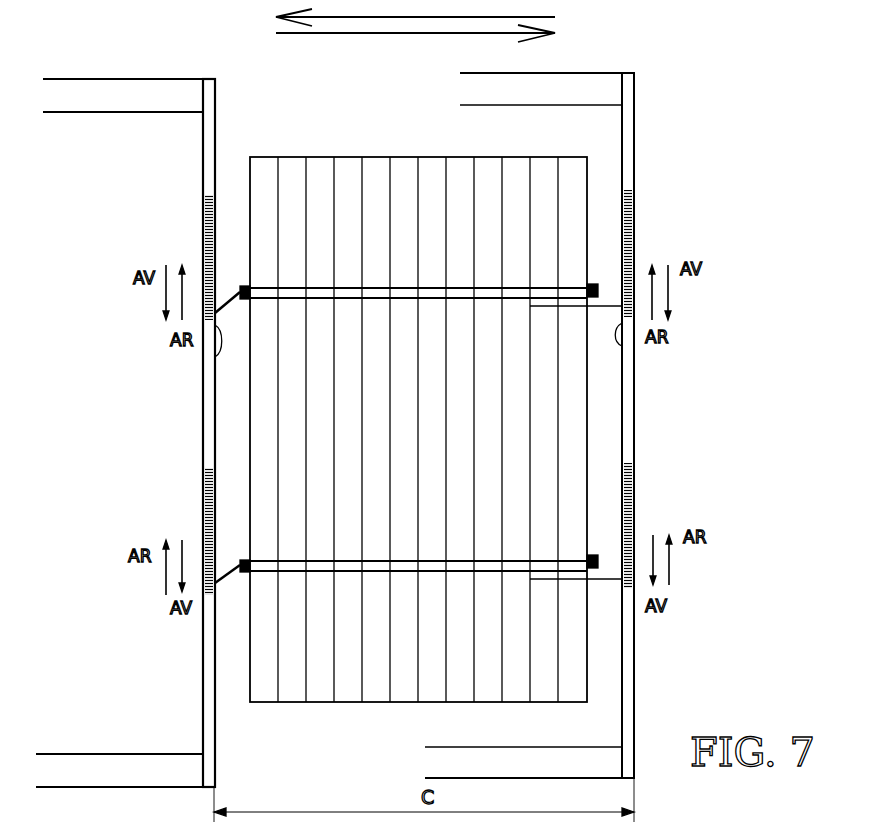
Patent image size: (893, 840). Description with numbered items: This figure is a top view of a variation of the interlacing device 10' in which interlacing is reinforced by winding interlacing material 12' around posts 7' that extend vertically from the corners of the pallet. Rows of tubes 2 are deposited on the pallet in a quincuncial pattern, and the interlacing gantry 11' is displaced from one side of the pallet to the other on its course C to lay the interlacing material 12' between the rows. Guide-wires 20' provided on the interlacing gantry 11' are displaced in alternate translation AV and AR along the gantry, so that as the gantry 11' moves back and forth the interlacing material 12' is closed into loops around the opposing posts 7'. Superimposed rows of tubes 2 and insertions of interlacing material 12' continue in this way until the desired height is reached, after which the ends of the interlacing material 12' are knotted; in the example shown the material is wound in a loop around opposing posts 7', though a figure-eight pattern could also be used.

The interlacing device 10' is at (412, 430).
The interlacing material 12' is at (433, 237).
The posts 7' is at (438, 394).
The guide-wires 20' is at (429, 373).
The tubes 2 is at (553, 372).
The interlacing gantry 11' is at (435, 517).